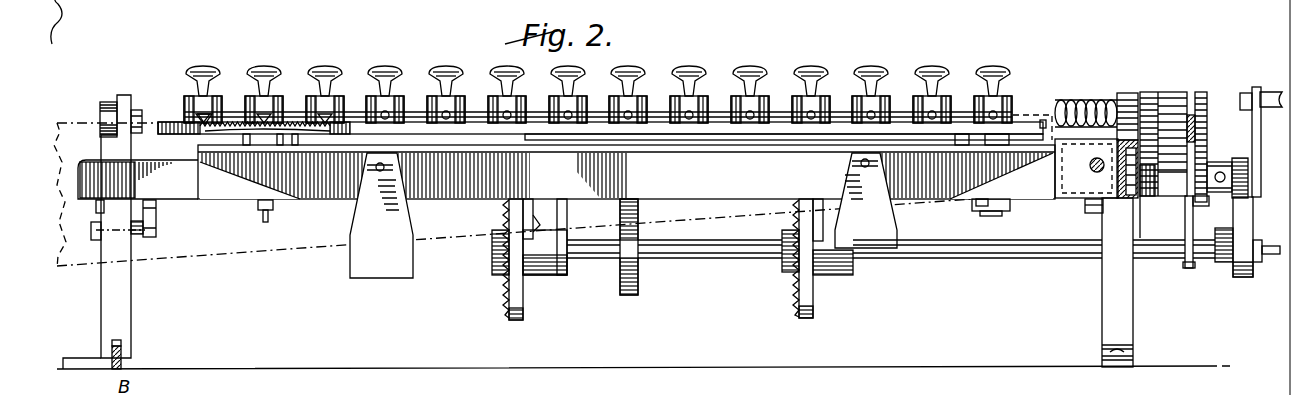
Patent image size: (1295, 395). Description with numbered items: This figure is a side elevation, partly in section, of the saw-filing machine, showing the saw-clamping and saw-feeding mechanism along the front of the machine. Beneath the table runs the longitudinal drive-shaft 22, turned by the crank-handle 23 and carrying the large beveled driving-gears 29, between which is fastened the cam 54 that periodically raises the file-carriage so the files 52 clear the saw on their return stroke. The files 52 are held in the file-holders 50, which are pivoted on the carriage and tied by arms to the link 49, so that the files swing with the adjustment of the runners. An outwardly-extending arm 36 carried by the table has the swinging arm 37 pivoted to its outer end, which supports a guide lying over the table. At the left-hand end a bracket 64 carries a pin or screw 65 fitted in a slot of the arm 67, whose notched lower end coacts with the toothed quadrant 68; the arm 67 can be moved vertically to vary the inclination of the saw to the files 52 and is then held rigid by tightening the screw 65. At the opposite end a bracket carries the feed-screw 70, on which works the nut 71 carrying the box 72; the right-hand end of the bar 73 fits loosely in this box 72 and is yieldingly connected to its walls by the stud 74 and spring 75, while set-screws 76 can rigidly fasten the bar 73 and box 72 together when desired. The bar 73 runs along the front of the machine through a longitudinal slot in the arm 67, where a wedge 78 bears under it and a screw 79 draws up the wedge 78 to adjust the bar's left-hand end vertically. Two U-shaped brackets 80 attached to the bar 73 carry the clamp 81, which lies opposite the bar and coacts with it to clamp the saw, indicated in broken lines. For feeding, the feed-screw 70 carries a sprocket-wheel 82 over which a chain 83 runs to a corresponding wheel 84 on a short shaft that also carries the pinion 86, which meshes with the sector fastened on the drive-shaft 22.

The drive-shaft 22 is at (1012, 252).
The crank-handle 23 is at (1261, 181).
The large beveled driving-gears 29 is at (525, 314).
The outwardly-extending arm 36 is at (995, 212).
The swinging arm 37 is at (974, 204).
The link 49 is at (956, 121).
The file-holders 50 is at (205, 106).
The files 52 is at (205, 122).
The cam 54 is at (640, 284).
The bracket 64 is at (107, 102).
The pin or screw 65 is at (135, 110).
The arm 67 is at (120, 293).
The toothed quadrant 68 is at (123, 363).
The feed-screw 70 is at (1085, 100).
The nut 71 is at (1130, 97).
The box 72 is at (1086, 168).
The bar 73 is at (229, 188).
The stud 74 is at (1158, 192).
The spring 75 is at (1132, 200).
The set-screws 76 is at (1093, 159).
The wedge 78 is at (150, 218).
The screw 79 is at (150, 236).
The U-shaped brackets 80 is at (623, 215).
The clamp 81 is at (626, 172).
The sprocket-wheel 82 is at (1200, 93).
The chain 83 is at (1206, 146).
The wheel 84 is at (1199, 198).
The pinion 86 is at (1243, 157).